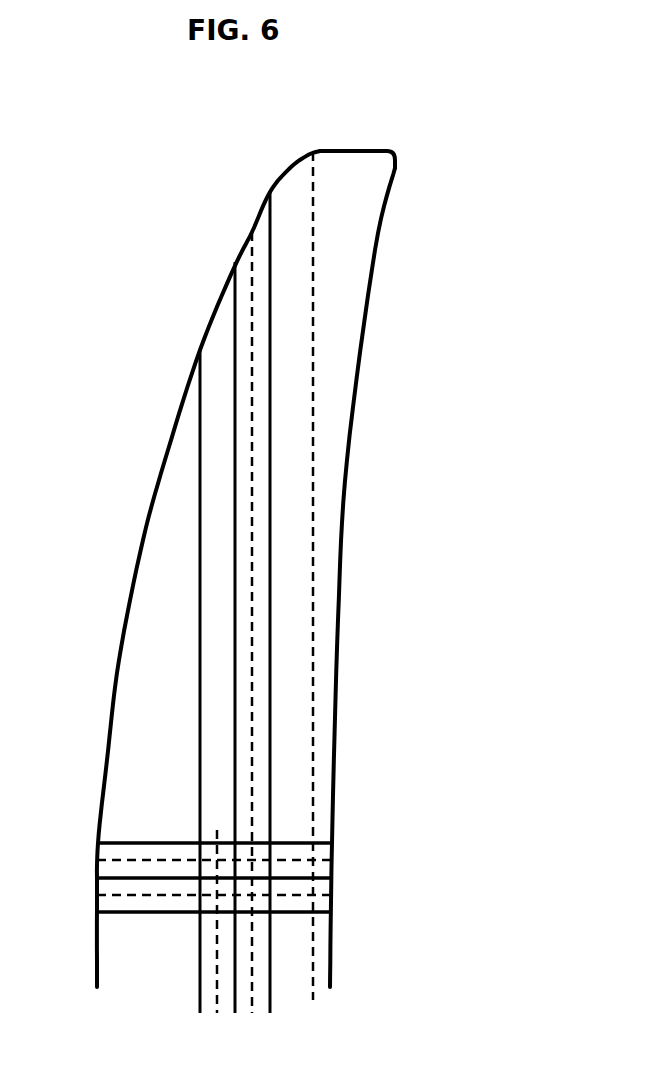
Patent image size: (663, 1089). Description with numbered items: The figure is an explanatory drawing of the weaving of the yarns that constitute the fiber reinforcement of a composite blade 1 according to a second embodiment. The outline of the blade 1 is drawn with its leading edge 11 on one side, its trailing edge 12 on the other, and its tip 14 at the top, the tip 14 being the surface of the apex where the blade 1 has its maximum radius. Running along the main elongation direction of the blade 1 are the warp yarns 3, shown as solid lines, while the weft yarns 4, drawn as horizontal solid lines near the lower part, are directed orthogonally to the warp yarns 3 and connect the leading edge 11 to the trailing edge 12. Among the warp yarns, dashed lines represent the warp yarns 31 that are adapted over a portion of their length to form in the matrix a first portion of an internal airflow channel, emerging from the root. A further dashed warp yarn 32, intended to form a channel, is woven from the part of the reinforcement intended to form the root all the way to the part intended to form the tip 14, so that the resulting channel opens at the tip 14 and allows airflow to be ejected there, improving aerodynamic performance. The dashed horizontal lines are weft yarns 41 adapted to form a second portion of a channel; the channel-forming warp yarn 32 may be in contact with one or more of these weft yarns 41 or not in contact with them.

The blade 1 is at (287, 544).
The leading edge 11 is at (128, 598).
The trailing edge 12 is at (343, 596).
The tip 14 is at (348, 151).
The warp yarns 3 is at (268, 397).
The warp yarn adapted to form a first channel portion 31 is at (252, 975).
The warp yarn intended to form a channel 32 is at (313, 527).
The weft yarns 4 is at (127, 843).
The weft yarn adapted to form a second channel portion 41 is at (120, 897).